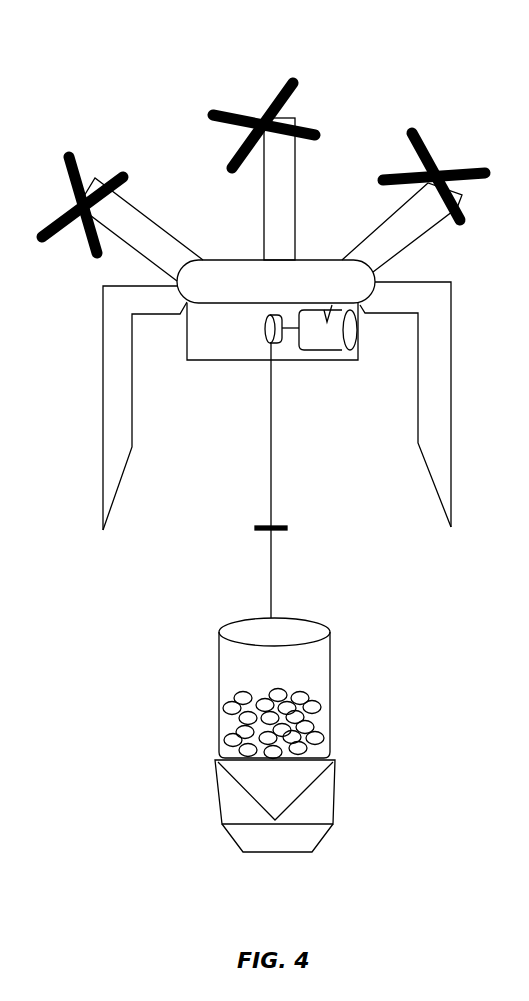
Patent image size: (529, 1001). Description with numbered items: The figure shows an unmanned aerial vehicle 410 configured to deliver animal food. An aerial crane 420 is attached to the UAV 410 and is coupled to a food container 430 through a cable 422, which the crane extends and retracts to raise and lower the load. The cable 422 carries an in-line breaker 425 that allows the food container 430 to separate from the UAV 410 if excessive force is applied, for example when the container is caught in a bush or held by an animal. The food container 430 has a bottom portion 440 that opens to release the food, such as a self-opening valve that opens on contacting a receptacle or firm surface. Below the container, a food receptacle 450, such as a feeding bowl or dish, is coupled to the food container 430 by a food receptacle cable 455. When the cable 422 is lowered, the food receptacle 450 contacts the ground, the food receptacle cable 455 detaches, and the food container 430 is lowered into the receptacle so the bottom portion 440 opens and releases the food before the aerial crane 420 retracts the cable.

The unmanned aerial vehicle 410 is at (360, 97).
The aerial crane 420 is at (325, 338).
The cable 422 is at (270, 467).
The in-line breaker 425 is at (253, 524).
The food container 430 is at (332, 678).
The bottom portion 440 is at (303, 790).
The food receptacle 450 is at (325, 838).
The food receptacle cable 455 is at (217, 798).